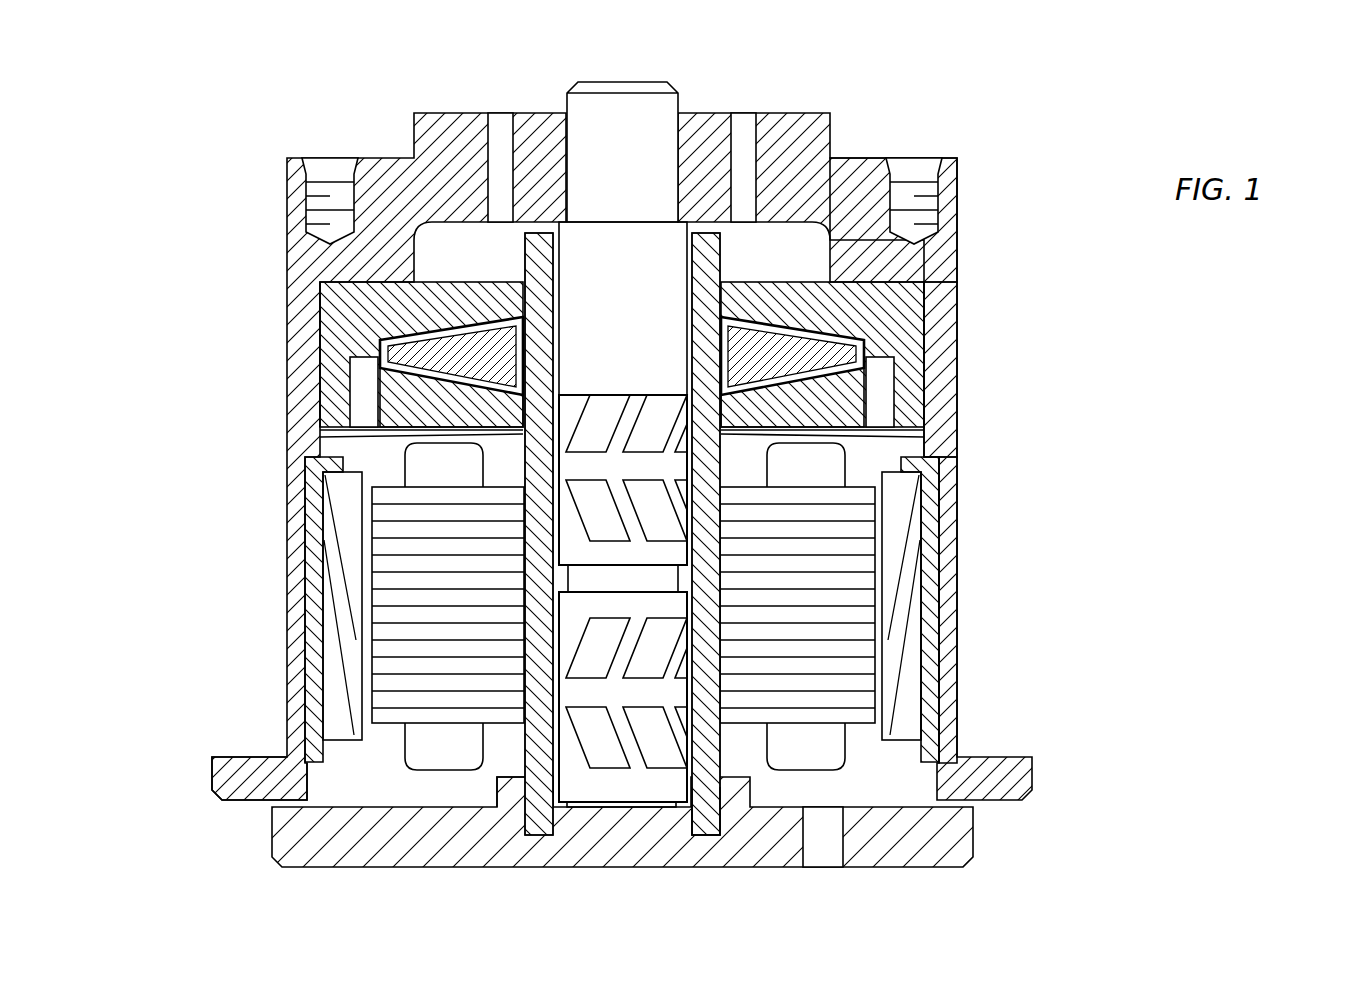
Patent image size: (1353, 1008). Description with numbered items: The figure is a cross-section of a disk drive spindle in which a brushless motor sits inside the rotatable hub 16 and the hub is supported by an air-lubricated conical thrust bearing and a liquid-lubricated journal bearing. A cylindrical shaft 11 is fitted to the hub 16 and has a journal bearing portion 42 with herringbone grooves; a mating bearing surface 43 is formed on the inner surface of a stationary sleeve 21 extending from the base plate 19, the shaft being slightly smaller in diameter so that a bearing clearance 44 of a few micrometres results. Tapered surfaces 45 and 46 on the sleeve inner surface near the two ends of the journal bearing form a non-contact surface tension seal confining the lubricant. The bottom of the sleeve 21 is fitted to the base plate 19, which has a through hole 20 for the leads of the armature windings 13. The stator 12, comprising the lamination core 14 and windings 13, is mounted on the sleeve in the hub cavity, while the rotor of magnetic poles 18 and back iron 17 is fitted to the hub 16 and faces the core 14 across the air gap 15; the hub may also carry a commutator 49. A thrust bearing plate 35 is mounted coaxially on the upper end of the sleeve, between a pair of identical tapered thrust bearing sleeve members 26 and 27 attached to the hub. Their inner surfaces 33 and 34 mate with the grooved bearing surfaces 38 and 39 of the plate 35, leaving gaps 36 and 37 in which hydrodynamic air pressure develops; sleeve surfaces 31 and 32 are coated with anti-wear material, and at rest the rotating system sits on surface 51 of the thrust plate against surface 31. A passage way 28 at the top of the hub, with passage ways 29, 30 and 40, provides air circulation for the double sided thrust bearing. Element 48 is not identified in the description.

The cylindrical shaft 11 is at (625, 105).
The stator 12 is at (862, 468).
The armature windings 13 is at (812, 470).
The lamination core 14 is at (820, 700).
The air gap 15 is at (883, 592).
The rotatable hub 16 is at (948, 600).
The rotor back iron 17 is at (932, 652).
The magnetic poles 18 is at (912, 638).
The base plate 19 is at (920, 830).
The through hole 20 is at (820, 840).
The sleeve 21 is at (705, 840).
The tapered thrust bearing sleeve member 26 is at (918, 406).
The tapered thrust bearing sleeve member 27 is at (910, 337).
The passage way 28 is at (502, 130).
The passage way 29 is at (523, 278).
The passage way 30 is at (322, 438).
The surface of tapered sleeve 31 is at (740, 300).
The surface of tapered sleeve 32 is at (790, 428).
The inner surface 33 is at (400, 300).
The inner surface 34 is at (383, 397).
The thrust bearing plate 35 is at (322, 303).
The gap 36 is at (731, 393).
The gap 37 is at (735, 405).
The bearing surface 38 is at (516, 322).
The bearing surface 39 is at (355, 411).
The passage way 40 is at (885, 395).
The journal bearing portion 42 is at (592, 653).
The mating bearing surface 43 is at (562, 667).
The bearing clearance 44 is at (560, 587).
The tapered surface 45 is at (556, 360).
The tapered surface 46 is at (517, 777).
The shaft end 48 is at (603, 805).
The commutator 49 is at (252, 800).
The surface of thrust plate 51 is at (727, 316).